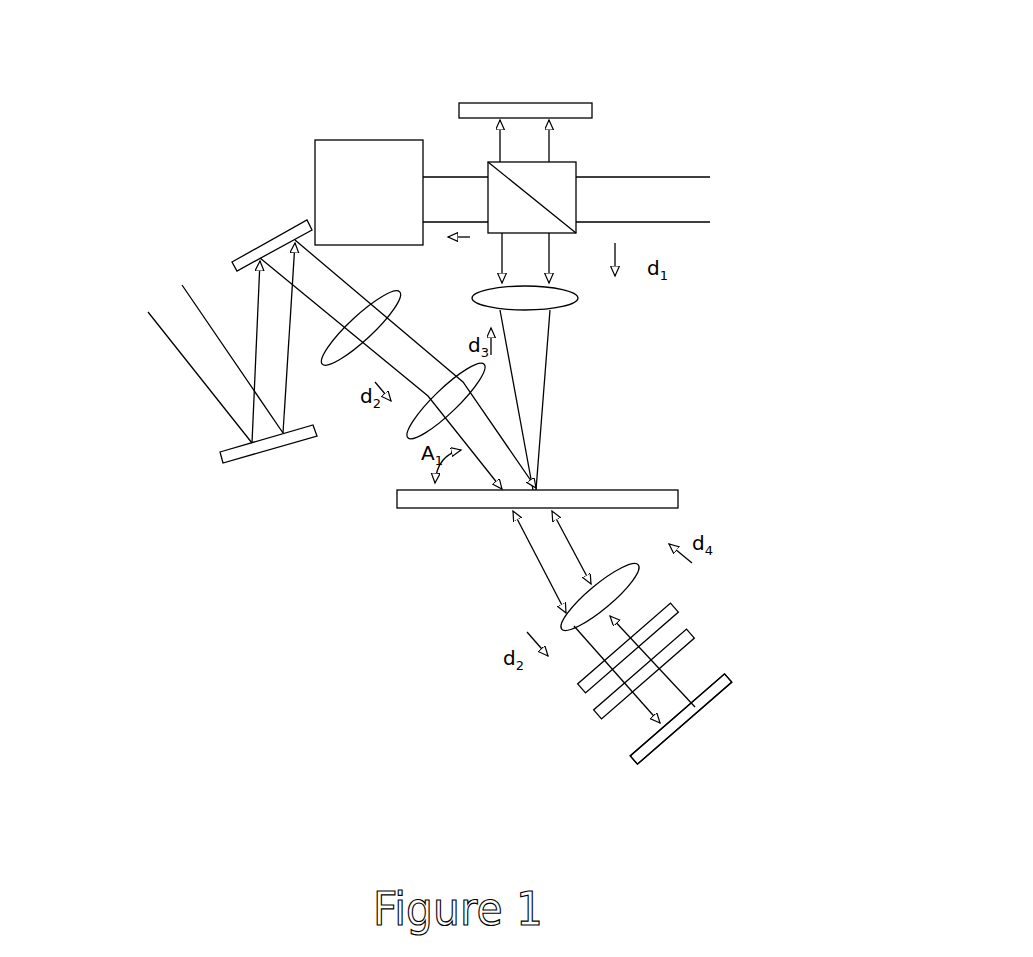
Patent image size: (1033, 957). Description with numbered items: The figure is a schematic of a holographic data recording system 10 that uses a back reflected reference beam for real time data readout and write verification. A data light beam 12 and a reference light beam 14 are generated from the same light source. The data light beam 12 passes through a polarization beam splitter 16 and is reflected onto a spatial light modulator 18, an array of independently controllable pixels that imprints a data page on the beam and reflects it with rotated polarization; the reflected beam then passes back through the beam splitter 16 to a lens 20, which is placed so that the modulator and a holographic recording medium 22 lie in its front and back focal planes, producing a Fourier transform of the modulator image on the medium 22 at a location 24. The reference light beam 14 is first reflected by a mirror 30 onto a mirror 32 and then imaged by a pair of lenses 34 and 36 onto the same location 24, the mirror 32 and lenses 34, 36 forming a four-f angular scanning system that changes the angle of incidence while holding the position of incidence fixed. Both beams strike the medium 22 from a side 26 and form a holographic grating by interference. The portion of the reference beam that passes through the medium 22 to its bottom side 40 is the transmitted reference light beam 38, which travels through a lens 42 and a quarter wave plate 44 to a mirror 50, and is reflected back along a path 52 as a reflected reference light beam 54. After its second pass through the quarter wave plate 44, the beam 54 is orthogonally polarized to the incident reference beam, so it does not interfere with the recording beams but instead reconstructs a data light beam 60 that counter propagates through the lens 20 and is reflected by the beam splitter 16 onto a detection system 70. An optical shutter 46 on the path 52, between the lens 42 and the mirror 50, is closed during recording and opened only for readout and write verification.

The holographic data recording system 10 is at (305, 76).
The data light beam 12 is at (632, 177).
The reference light beam 14 is at (193, 368).
The polarization beam splitter 16 is at (557, 190).
The spatial light modulator 18 is at (526, 102).
The lens 20 is at (557, 297).
The holographic recording medium 22 is at (627, 495).
The location 24 is at (536, 488).
The side 26 is at (603, 460).
The mirror 30 is at (264, 455).
The mirror 32 is at (268, 241).
The lens 34 is at (323, 367).
The lens 36 is at (407, 437).
The transmitted reference light beam 38 is at (645, 708).
The bottom side 40 is at (451, 656).
The lens 42 is at (574, 632).
The quarter wave plate 44 is at (691, 633).
The optical shutter 46 is at (674, 607).
The mirror 50 is at (732, 683).
The path 52 is at (648, 640).
The reflected reference light beam 54 is at (673, 673).
The reconstructed data light beam 60 is at (455, 176).
The detection system 70 is at (328, 155).